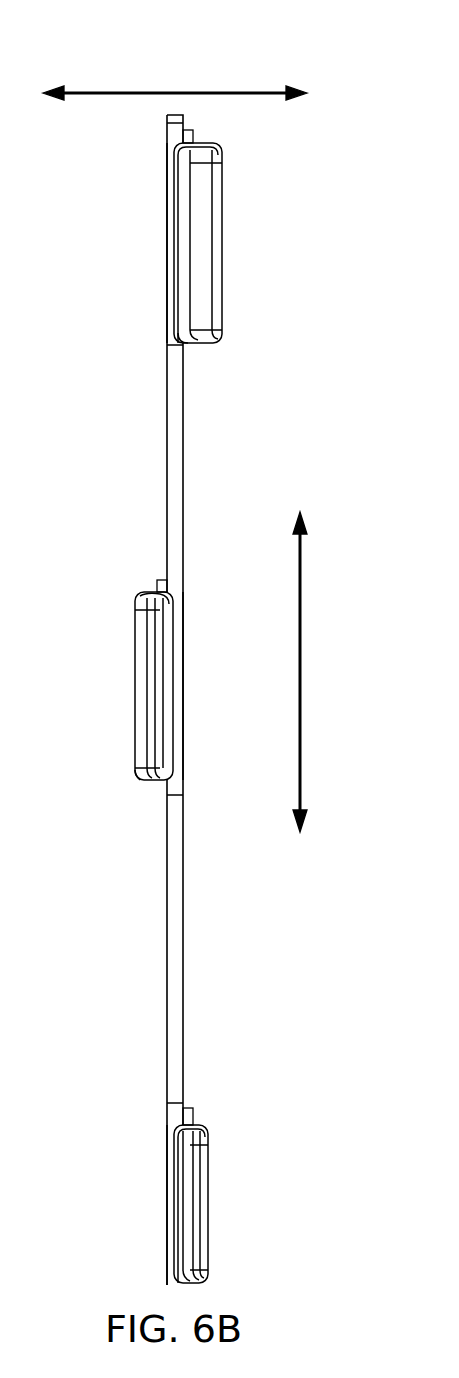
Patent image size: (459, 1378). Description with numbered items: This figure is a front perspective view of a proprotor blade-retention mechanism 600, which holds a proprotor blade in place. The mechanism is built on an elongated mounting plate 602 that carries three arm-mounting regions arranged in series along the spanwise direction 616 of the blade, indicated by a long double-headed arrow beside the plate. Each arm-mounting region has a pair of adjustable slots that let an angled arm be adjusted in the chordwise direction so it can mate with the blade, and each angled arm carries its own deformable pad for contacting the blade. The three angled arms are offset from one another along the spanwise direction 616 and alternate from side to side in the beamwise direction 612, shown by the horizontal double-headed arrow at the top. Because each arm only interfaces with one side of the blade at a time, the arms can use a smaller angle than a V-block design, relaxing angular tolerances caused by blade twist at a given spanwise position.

The proprotor blade-retention mechanism 600 is at (246, 62).
The mounting plate 602 is at (184, 427).
The beamwise direction arrow 612 is at (175, 92).
The spanwise direction arrow 616 is at (303, 670).